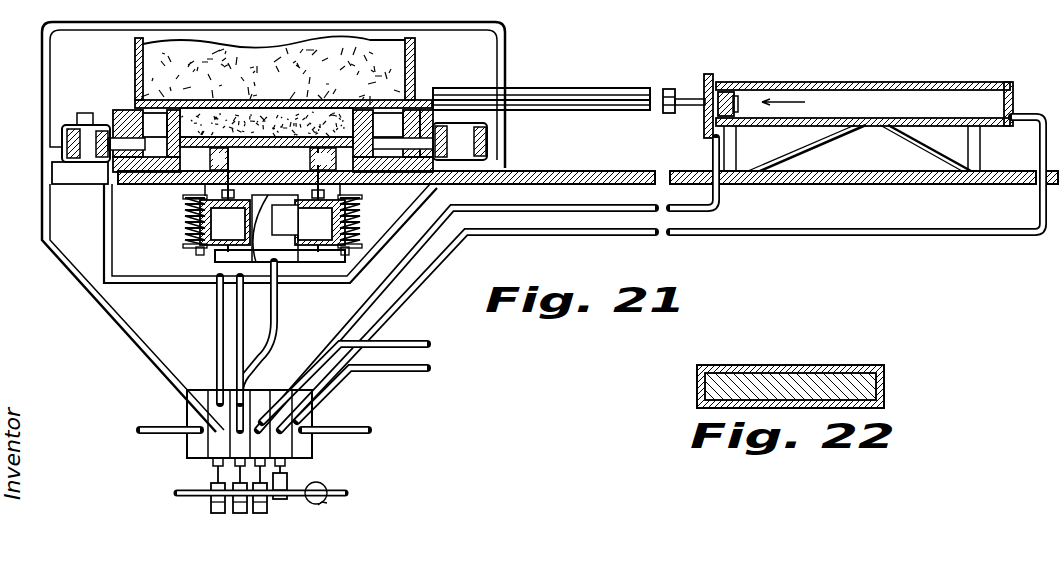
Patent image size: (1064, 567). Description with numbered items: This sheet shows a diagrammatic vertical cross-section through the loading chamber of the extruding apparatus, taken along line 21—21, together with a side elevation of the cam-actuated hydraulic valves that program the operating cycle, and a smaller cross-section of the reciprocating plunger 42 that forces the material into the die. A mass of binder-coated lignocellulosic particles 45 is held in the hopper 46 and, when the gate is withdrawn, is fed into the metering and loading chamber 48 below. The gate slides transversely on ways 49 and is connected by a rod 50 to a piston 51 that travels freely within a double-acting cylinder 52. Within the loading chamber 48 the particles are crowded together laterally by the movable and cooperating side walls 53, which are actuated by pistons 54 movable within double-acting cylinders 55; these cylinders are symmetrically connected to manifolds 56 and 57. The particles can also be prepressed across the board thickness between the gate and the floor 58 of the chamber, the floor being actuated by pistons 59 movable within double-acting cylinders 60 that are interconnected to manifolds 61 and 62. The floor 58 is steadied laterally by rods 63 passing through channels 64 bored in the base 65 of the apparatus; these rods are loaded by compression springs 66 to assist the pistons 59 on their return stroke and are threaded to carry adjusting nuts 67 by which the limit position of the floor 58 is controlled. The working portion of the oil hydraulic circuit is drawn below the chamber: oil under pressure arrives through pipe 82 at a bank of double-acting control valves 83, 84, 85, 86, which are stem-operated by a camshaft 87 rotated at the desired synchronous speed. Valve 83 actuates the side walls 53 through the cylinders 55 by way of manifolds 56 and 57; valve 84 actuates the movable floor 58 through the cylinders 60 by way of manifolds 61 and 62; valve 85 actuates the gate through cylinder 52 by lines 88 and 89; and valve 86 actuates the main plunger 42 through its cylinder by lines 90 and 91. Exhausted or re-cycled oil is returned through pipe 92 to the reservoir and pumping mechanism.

In FIG. 21, the section line 21 is at (378, 15).
In FIG. 22, the reciprocating plunger 42 is at (795, 388).
In FIG. 21, the binder-coated lignocellulosic particles 45 is at (158, 56).
In FIG. 21, the hopper 46 is at (416, 55).
In FIG. 21, the metering and loading chamber 48 is at (196, 115).
In FIG. 21, the ways 49 is at (551, 100).
In FIG. 21, the rod 50 is at (618, 108).
In FIG. 21, the piston 51 is at (722, 84).
In FIG. 21, the double-acting cylinder 52 is at (868, 83).
In FIG. 21, the movable and cooperating side walls 53 is at (273, 141).
In FIG. 21, the pistons 54 is at (88, 124).
In FIG. 21, the double-acting cylinders 55 is at (88, 165).
In FIG. 21, the manifold 56 is at (190, 284).
In FIG. 21, the manifold 57 is at (44, 39).
In FIG. 21, the floor 58 is at (288, 152).
In FIG. 21, the pistons 59 is at (272, 222).
In FIG. 21, the double-acting cylinders 60 is at (433, 14).
In FIG. 21, the manifold 61 is at (432, 15).
In FIG. 21, the manifold 62 is at (305, 259).
In FIG. 21, the rods 63 is at (188, 230).
In FIG. 21, the channels 64 is at (273, 159).
In FIG. 21, the base 65 is at (162, 187).
In FIG. 21, the compression springs 66 is at (190, 246).
In FIG. 21, the adjusting nuts 67 is at (198, 205).
In FIG. 21, the pipe 82 is at (373, 432).
In FIG. 21, the double-acting control valve 83 is at (212, 390).
In FIG. 21, the double-acting control valve 84 is at (224, 366).
In FIG. 21, the double-acting control valve 85 is at (300, 345).
In FIG. 21, the double-acting control valve 86 is at (278, 320).
In FIG. 21, the camshaft 87 is at (350, 494).
In FIG. 21, the line 88 is at (356, 300).
In FIG. 21, the line 89 is at (400, 295).
In FIG. 21, the line 90 is at (431, 343).
In FIG. 21, the line 91 is at (431, 368).
In FIG. 21, the pipe 92 is at (137, 433).